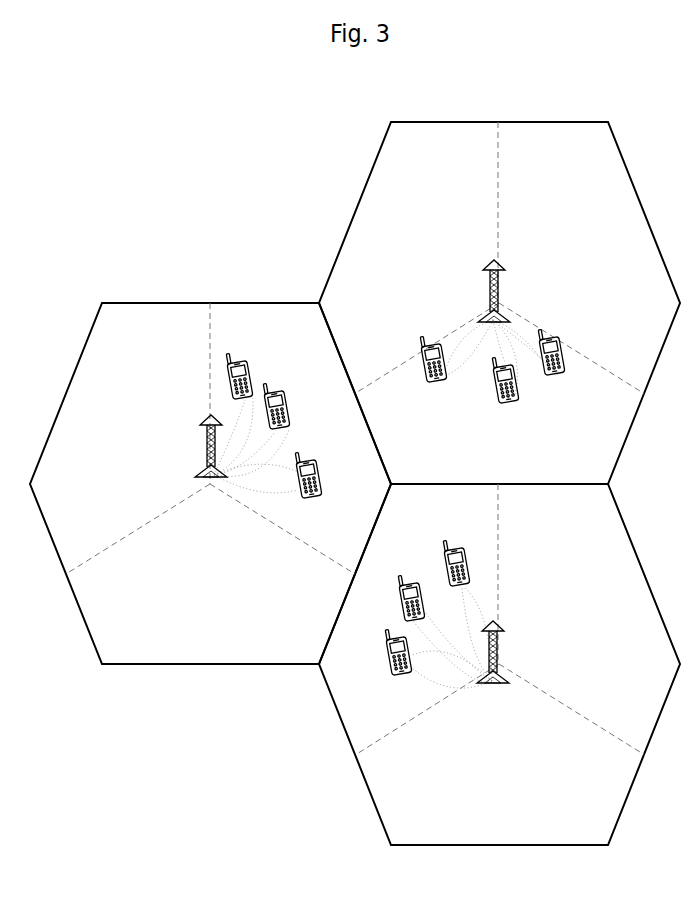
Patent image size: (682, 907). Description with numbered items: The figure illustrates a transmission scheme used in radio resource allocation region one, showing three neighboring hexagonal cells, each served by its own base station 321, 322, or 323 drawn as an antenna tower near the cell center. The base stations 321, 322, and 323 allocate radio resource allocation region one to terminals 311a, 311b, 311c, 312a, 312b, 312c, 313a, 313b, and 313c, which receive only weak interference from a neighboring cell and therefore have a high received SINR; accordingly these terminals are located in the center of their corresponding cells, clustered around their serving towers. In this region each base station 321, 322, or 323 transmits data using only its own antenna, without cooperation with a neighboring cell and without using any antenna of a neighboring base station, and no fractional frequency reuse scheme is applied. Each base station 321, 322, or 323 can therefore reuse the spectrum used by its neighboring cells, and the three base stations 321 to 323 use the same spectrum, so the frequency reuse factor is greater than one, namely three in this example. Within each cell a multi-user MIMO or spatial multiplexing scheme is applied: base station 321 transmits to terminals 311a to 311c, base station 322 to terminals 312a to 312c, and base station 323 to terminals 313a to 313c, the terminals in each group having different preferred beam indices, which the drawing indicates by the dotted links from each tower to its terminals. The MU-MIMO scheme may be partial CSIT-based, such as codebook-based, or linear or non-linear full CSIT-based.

The base station 321 is at (500, 279).
The base station 322 is at (500, 639).
The base station 323 is at (205, 434).
The terminal 311a is at (565, 347).
The terminal 311b is at (519, 394).
The terminal 311c is at (423, 342).
The terminal 312a is at (470, 562).
The terminal 312b is at (400, 601).
The terminal 312c is at (387, 663).
The terminal 313a is at (228, 372).
The terminal 313b is at (270, 392).
The terminal 313c is at (315, 462).